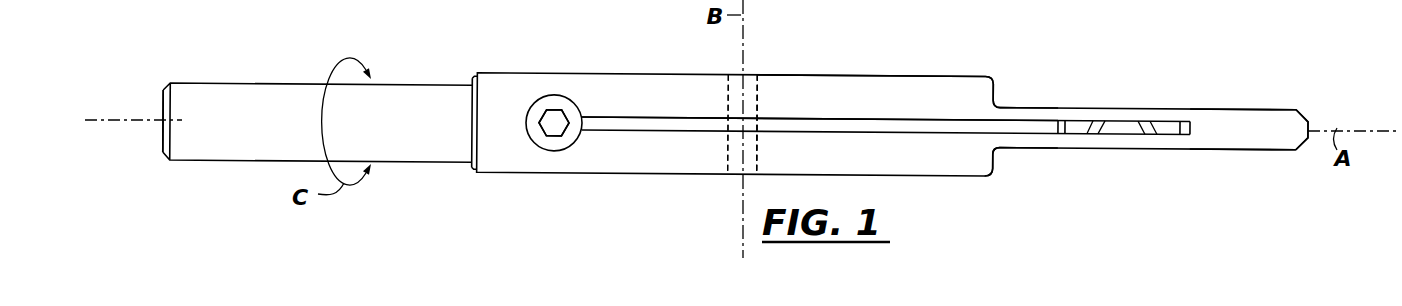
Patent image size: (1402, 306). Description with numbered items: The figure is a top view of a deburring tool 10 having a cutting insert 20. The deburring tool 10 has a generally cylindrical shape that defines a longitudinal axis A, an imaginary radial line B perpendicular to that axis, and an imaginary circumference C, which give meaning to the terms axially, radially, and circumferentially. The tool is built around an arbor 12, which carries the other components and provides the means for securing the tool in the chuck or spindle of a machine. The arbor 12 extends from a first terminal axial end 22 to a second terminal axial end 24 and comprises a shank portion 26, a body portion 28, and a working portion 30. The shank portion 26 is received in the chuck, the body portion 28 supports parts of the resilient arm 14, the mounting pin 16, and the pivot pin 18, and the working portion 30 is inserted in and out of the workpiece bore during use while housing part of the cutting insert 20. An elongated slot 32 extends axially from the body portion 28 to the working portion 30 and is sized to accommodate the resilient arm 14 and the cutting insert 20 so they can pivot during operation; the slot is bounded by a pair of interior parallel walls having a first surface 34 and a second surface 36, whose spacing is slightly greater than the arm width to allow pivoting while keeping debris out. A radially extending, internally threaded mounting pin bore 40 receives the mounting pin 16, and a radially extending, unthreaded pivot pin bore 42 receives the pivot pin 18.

The deburring tool 10 is at (946, 48).
The arbor 12 is at (624, 72).
The resilient arm 14 is at (892, 140).
The mounting pin 16 is at (567, 97).
The pivot pin 18 is at (732, 178).
The cutting insert 20 is at (1121, 138).
The first terminal axial end 22 is at (162, 102).
The second terminal axial end 24 is at (1310, 121).
The shank portion 26 is at (252, 95).
The body portion 28 is at (879, 93).
The working portion 30 is at (1240, 129).
The elongated slot 32 is at (927, 125).
The first surface 34 is at (1013, 121).
The second surface 36 is at (1040, 130).
The mounting pin bore 40 is at (527, 122).
The pivot pin bore 42 is at (757, 90).